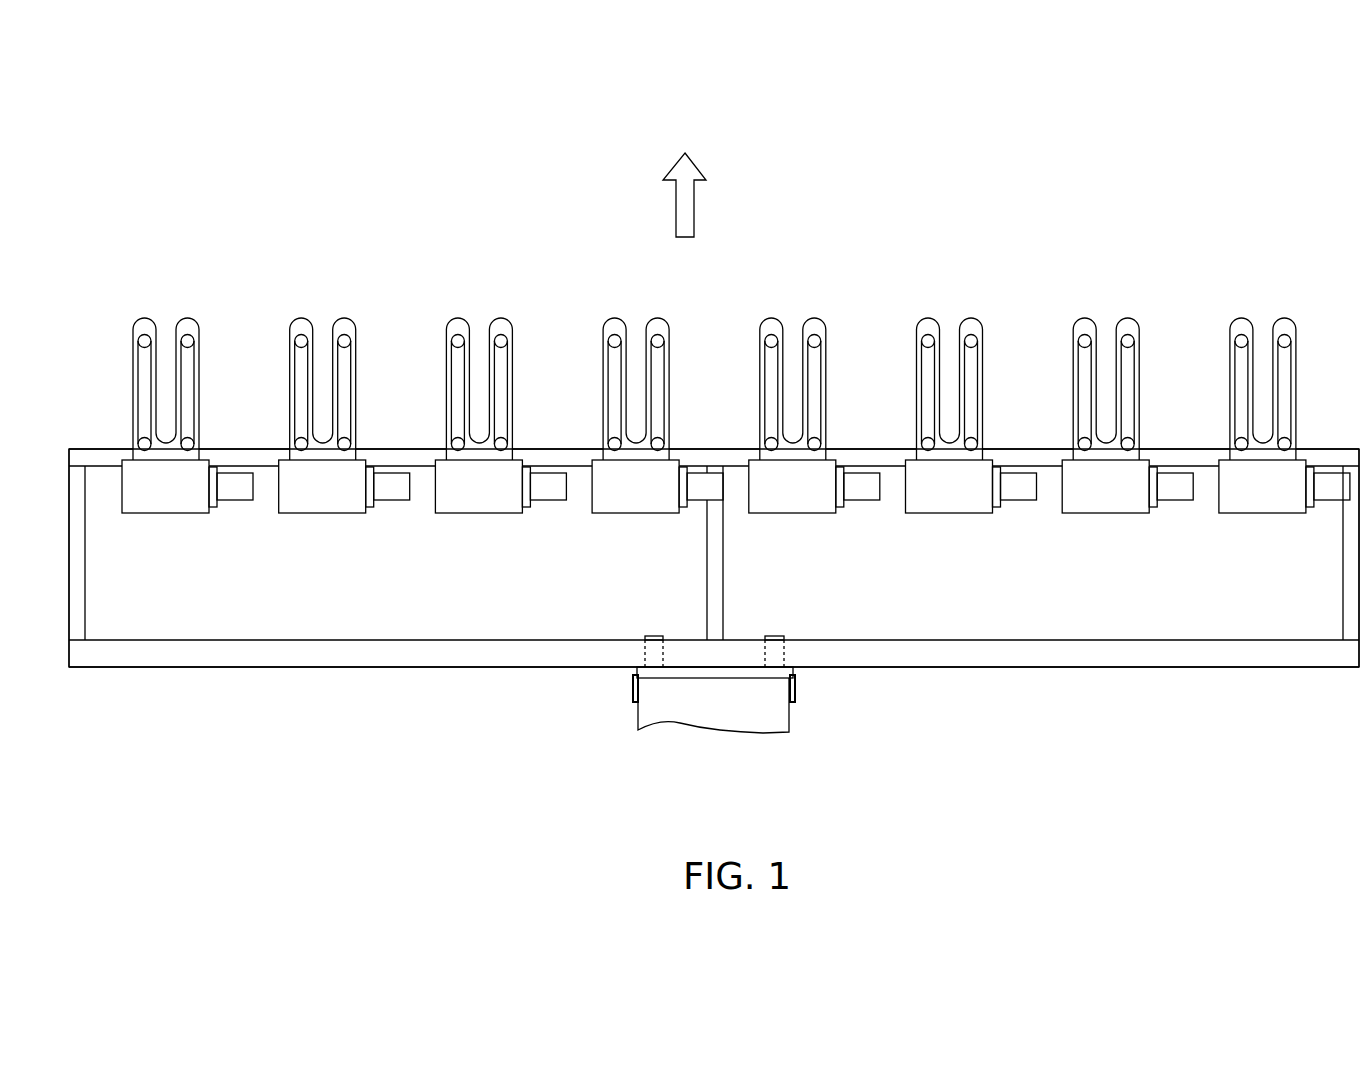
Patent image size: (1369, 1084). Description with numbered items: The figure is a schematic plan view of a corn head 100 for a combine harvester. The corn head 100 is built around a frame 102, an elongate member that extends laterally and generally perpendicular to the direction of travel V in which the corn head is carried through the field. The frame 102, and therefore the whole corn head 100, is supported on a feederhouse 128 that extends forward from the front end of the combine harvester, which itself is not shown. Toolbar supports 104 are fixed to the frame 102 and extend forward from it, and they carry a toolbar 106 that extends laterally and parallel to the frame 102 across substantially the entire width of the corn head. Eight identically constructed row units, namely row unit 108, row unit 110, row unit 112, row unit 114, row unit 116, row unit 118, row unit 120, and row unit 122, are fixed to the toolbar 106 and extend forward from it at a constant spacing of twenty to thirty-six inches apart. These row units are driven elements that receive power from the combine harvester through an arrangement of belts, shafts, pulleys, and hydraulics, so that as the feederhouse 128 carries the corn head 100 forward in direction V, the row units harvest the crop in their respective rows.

The corn head 100 is at (1040, 160).
The frame 102 is at (950, 652).
The toolbar supports 104 is at (76, 600).
The toolbar 106 is at (233, 447).
The row unit 108 is at (166, 485).
The row unit 110 is at (322, 485).
The row unit 112 is at (479, 485).
The row unit 114 is at (636, 485).
The row unit 116 is at (792, 485).
The row unit 118 is at (949, 485).
The row unit 120 is at (1106, 485).
The row unit 122 is at (1262, 485).
The feederhouse 128 is at (732, 707).